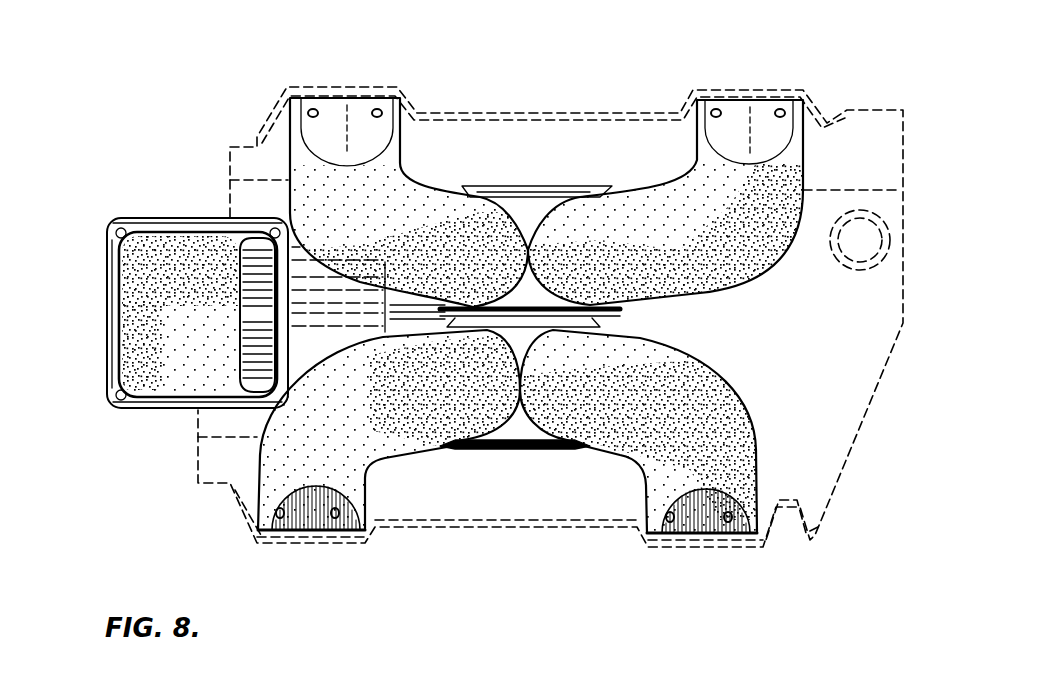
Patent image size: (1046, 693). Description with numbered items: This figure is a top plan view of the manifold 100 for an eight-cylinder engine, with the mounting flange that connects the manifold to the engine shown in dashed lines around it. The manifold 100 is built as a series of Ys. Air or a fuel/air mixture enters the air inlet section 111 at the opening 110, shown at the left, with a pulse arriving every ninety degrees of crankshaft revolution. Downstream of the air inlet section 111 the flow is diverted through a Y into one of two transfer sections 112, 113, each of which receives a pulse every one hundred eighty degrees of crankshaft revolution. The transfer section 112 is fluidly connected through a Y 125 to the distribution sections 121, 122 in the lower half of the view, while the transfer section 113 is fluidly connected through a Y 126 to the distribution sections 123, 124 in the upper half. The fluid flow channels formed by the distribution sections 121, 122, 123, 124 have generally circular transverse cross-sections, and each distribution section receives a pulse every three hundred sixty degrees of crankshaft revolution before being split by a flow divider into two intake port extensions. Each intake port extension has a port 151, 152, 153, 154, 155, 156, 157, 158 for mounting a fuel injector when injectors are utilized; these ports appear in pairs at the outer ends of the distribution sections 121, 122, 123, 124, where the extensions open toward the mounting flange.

The manifold 100 is at (106, 461).
The opening 110 is at (148, 343).
The air inlet section 111 is at (112, 277).
The transfer section 112 is at (253, 351).
The transfer section 113 is at (253, 291).
The distribution section 121 is at (402, 383).
The distribution section 122 is at (655, 375).
The distribution section 123 is at (413, 190).
The distribution section 124 is at (650, 203).
The Y 125 is at (519, 412).
The Y 126 is at (528, 228).
The port 151 is at (280, 516).
The port 152 is at (313, 110).
The port 153 is at (335, 516).
The port 154 is at (377, 110).
The port 155 is at (670, 520).
The port 156 is at (716, 110).
The port 157 is at (728, 520).
The port 158 is at (780, 110).